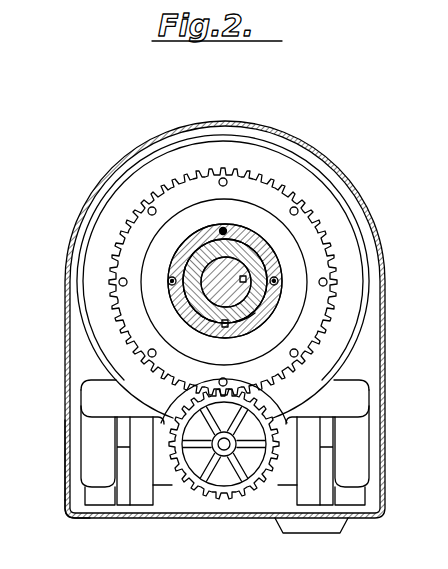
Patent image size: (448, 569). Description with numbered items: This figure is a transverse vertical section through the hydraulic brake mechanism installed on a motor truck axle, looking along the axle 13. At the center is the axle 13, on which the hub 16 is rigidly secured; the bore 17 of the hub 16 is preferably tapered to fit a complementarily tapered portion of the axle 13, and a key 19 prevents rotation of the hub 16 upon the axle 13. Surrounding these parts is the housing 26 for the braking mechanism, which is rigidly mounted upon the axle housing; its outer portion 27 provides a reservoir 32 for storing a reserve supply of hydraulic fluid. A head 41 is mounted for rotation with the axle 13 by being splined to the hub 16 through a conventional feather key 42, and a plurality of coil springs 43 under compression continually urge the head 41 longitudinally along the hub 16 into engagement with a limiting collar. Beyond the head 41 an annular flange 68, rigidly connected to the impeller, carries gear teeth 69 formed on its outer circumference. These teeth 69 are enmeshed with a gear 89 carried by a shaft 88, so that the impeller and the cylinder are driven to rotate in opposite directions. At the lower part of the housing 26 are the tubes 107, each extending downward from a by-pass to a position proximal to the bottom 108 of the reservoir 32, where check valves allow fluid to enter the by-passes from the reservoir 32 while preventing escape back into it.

The axle 13 is at (213, 272).
The hub 16 is at (191, 302).
The bore 17 is at (240, 314).
The key 19 is at (246, 278).
The housing 26 is at (58, 283).
The outer portion 27 is at (66, 453).
The reservoir 32 is at (77, 511).
The head 41 is at (243, 238).
The feather key 42 is at (224, 329).
The coil springs 43 is at (169, 283).
The annular flange 68 is at (316, 314).
The gear teeth 69 is at (311, 231).
The shaft 88 is at (224, 457).
The gear 89 is at (212, 490).
The tube 107 is at (361, 492).
The bottom 108 is at (272, 514).